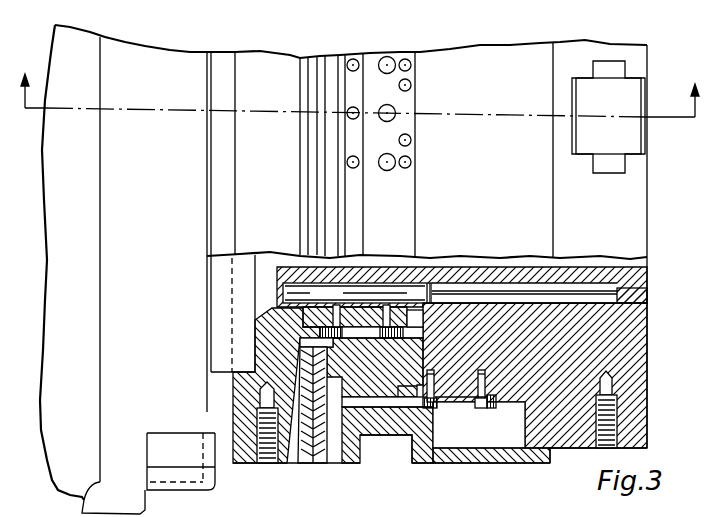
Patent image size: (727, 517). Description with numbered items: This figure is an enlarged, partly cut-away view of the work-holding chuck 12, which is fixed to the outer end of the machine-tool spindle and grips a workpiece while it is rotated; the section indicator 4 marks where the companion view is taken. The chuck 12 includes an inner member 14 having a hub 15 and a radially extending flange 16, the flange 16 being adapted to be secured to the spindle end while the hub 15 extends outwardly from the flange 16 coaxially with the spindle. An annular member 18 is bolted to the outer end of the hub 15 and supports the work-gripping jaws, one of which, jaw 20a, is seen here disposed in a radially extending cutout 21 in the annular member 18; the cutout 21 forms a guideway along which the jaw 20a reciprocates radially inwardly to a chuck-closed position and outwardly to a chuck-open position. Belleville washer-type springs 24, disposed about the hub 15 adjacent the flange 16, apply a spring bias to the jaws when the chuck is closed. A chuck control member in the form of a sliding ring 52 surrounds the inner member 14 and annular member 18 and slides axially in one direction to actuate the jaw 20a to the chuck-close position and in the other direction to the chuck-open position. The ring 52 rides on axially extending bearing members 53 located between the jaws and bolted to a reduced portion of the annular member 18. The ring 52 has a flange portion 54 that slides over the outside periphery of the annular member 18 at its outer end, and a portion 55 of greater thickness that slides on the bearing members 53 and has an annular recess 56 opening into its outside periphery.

The section line 4- 4 is at (358, 85).
The work-holding chuck 12 is at (459, 222).
The inner member 14 is at (290, 467).
The hub 15 is at (298, 266).
The radially extending flange 16 is at (250, 470).
The annular member 18 is at (628, 358).
The work-gripping jaw 20a is at (634, 137).
The radially extending cutout 21 is at (573, 125).
The Belleville spring 24 is at (306, 465).
The sliding ring 52 is at (479, 468).
The bearing member 53 is at (455, 405).
The flange portion 54 is at (533, 467).
The portion of greater thickness 55 is at (382, 462).
The annular recess 56 is at (410, 461).